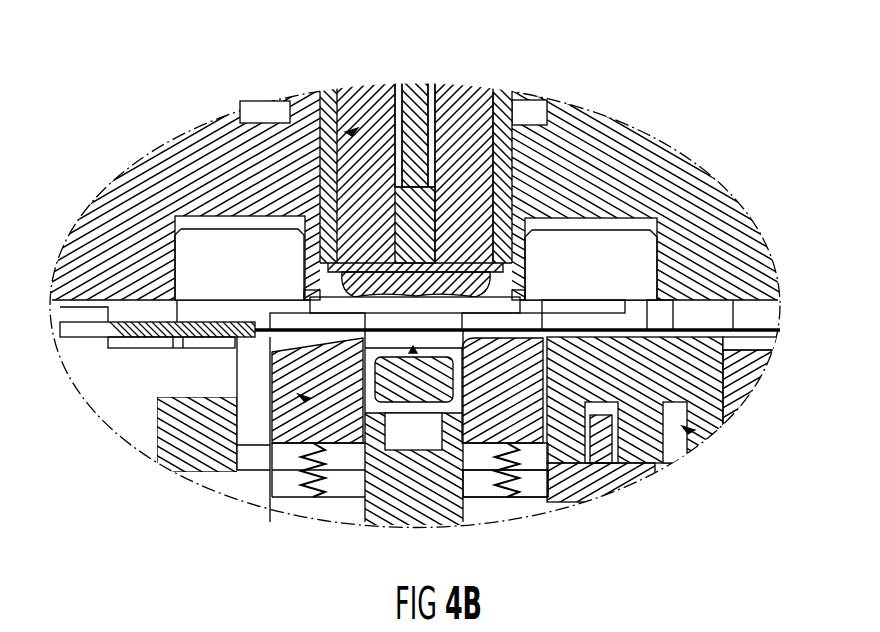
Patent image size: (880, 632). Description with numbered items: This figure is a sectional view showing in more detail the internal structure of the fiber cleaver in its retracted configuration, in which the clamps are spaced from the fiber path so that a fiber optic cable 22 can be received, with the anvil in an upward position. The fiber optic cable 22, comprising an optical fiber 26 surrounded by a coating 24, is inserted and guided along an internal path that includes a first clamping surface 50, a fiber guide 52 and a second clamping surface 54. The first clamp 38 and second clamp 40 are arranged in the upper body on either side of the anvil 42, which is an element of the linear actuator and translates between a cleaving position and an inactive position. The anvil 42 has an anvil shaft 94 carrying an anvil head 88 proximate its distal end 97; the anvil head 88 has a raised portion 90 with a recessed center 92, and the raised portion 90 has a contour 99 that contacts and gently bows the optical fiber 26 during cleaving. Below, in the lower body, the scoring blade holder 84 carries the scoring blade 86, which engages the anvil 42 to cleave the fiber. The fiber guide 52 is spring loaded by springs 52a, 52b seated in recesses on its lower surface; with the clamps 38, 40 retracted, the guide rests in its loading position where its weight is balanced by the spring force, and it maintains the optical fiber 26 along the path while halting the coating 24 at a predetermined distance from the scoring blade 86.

The fiber optic cable 22 is at (97, 345).
The coating 24 is at (108, 338).
The optical fiber 26 is at (160, 282).
The first clamp 38 is at (250, 300).
The second clamp 40 is at (628, 268).
The anvil 42 is at (368, 298).
The first clamping surface 50 is at (203, 338).
The fiber guide 52 is at (277, 470).
The spring 52a is at (305, 497).
The spring 52b is at (505, 500).
The second clamping surface 54 is at (590, 340).
The scoring blade holder 84 is at (398, 385).
The scoring blade 86 is at (512, 497).
The anvil head 88 is at (565, 296).
The raised portion 90 is at (200, 247).
The recessed center 92 is at (460, 198).
The anvil shaft 94 is at (485, 165).
The distal end 97 is at (465, 135).
The contour 99 is at (360, 292).